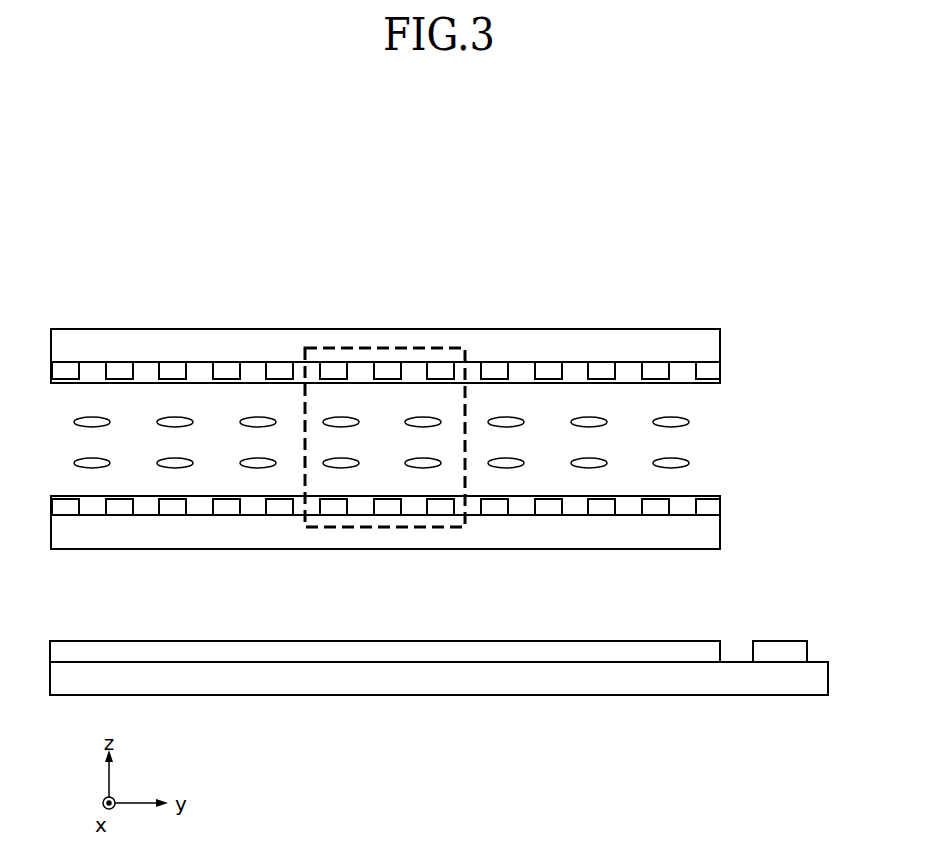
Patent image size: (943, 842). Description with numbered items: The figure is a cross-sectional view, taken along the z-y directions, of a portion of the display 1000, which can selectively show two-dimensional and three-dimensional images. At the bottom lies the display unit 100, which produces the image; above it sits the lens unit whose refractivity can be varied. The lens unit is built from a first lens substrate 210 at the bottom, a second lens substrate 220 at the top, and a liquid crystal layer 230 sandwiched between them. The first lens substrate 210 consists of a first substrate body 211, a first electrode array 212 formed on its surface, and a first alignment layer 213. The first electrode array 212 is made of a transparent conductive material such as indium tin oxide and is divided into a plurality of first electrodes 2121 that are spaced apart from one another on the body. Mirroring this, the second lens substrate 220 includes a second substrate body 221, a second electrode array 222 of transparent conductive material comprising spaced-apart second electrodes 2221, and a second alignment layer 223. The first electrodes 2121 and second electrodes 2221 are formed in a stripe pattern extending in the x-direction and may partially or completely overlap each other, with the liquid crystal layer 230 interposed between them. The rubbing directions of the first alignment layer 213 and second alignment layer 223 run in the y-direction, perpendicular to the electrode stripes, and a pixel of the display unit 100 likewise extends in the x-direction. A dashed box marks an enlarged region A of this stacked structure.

The display 1000 is at (293, 229).
The display unit 100 is at (365, 662).
The first lens substrate 210 is at (338, 548).
The first substrate body 211 is at (148, 532).
The first electrode array 212 is at (237, 529).
The first alignment layer 213 is at (198, 508).
The first electrodes 2121 is at (117, 507).
The second lens substrate 220 is at (466, 330).
The second substrate body 221 is at (582, 347).
The second electrode array 222 is at (541, 349).
The second alignment layer 223 is at (627, 370).
The second electrodes 2221 is at (658, 370).
The liquid crystal layer 230 is at (680, 417).
The enlarged region A is at (383, 347).